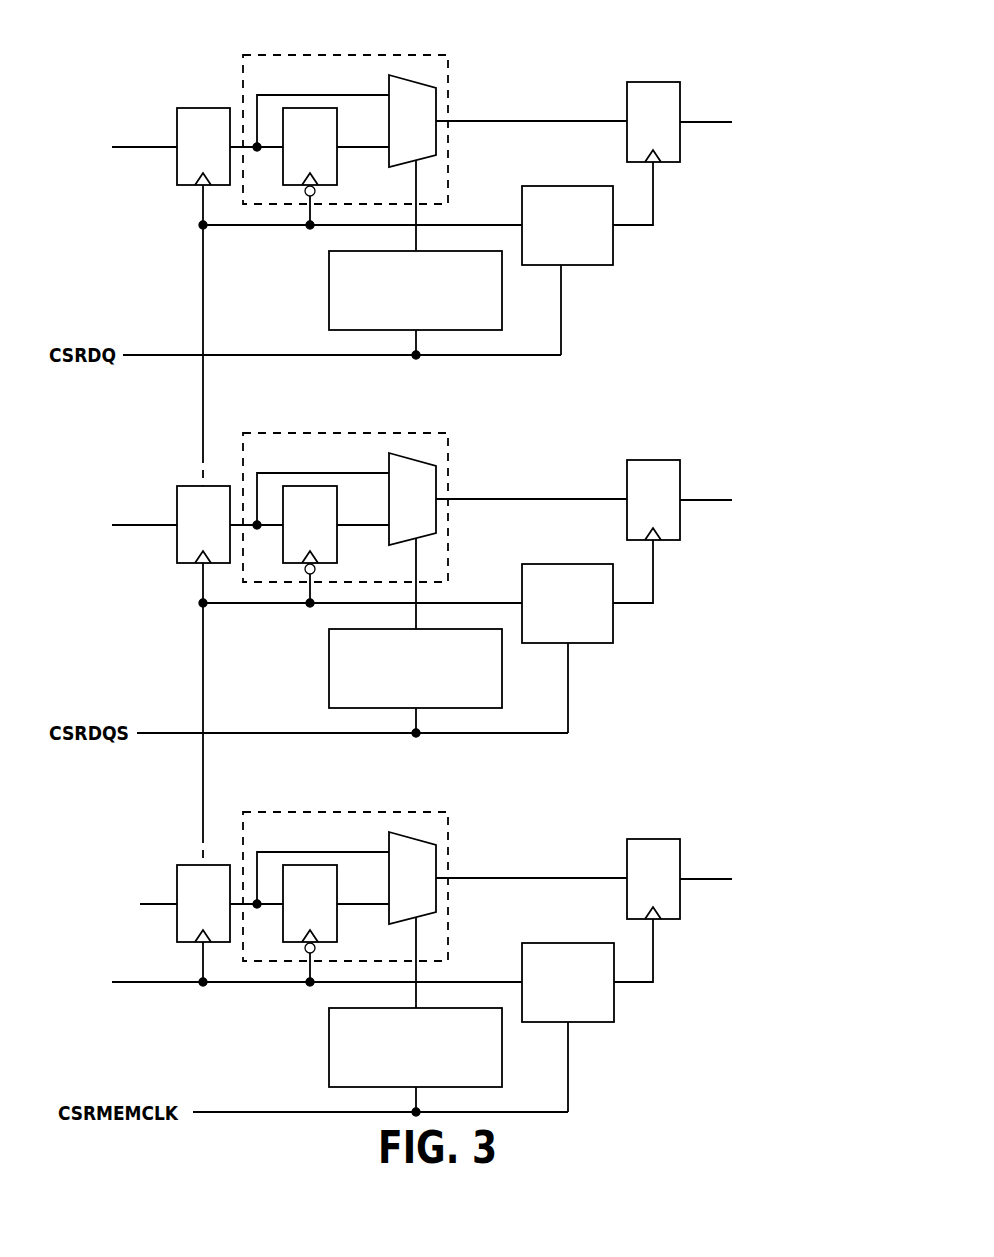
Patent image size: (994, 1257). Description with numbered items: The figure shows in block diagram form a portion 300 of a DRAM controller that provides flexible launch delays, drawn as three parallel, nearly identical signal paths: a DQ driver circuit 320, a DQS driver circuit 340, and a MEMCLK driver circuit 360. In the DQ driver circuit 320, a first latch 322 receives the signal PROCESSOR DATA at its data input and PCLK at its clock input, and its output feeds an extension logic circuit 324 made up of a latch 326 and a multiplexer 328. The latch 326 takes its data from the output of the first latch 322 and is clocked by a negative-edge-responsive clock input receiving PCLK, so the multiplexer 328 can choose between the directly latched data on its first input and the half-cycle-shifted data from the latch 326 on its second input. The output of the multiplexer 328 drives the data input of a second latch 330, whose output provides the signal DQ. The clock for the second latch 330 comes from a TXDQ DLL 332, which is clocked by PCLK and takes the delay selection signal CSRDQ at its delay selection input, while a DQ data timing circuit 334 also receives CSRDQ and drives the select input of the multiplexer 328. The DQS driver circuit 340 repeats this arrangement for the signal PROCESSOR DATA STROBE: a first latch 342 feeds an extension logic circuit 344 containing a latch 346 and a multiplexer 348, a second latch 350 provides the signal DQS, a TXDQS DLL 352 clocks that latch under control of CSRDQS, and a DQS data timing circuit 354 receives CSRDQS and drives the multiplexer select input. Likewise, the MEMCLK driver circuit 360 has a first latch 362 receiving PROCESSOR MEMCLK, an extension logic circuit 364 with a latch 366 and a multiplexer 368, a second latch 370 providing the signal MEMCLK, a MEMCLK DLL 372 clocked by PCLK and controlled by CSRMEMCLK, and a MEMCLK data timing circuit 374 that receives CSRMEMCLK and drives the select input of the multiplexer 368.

The portion of DRAM controller 300 is at (708, 57).
The DQ driver circuit 320 is at (140, 85).
The first latch 322 is at (219, 157).
The extension logic circuit 324 is at (362, 84).
The latch 326 is at (326, 157).
The multiplexer 328 is at (429, 131).
The second latch 330 is at (668, 134).
The TXDQ DLL 332 is at (583, 261).
The DQ data timing circuit 334 is at (430, 326).
The DQS driver circuit 340 is at (140, 463).
The first latch 342 is at (219, 535).
The extension logic circuit 344 is at (362, 462).
The latch 346 is at (326, 535).
The multiplexer 348 is at (429, 509).
The second latch 350 is at (668, 512).
The TXDQS DLL 352 is at (583, 639).
The DQS data timing circuit 354 is at (430, 704).
The MEMCLK driver circuit 360 is at (140, 842).
The first latch 362 is at (219, 914).
The extension logic circuit 364 is at (362, 841).
The latch 366 is at (326, 914).
The multiplexer 368 is at (429, 888).
The second latch 370 is at (668, 891).
The MEMCLK DLL 372 is at (583, 1018).
The MEMCLK data timing circuit 374 is at (430, 1083).